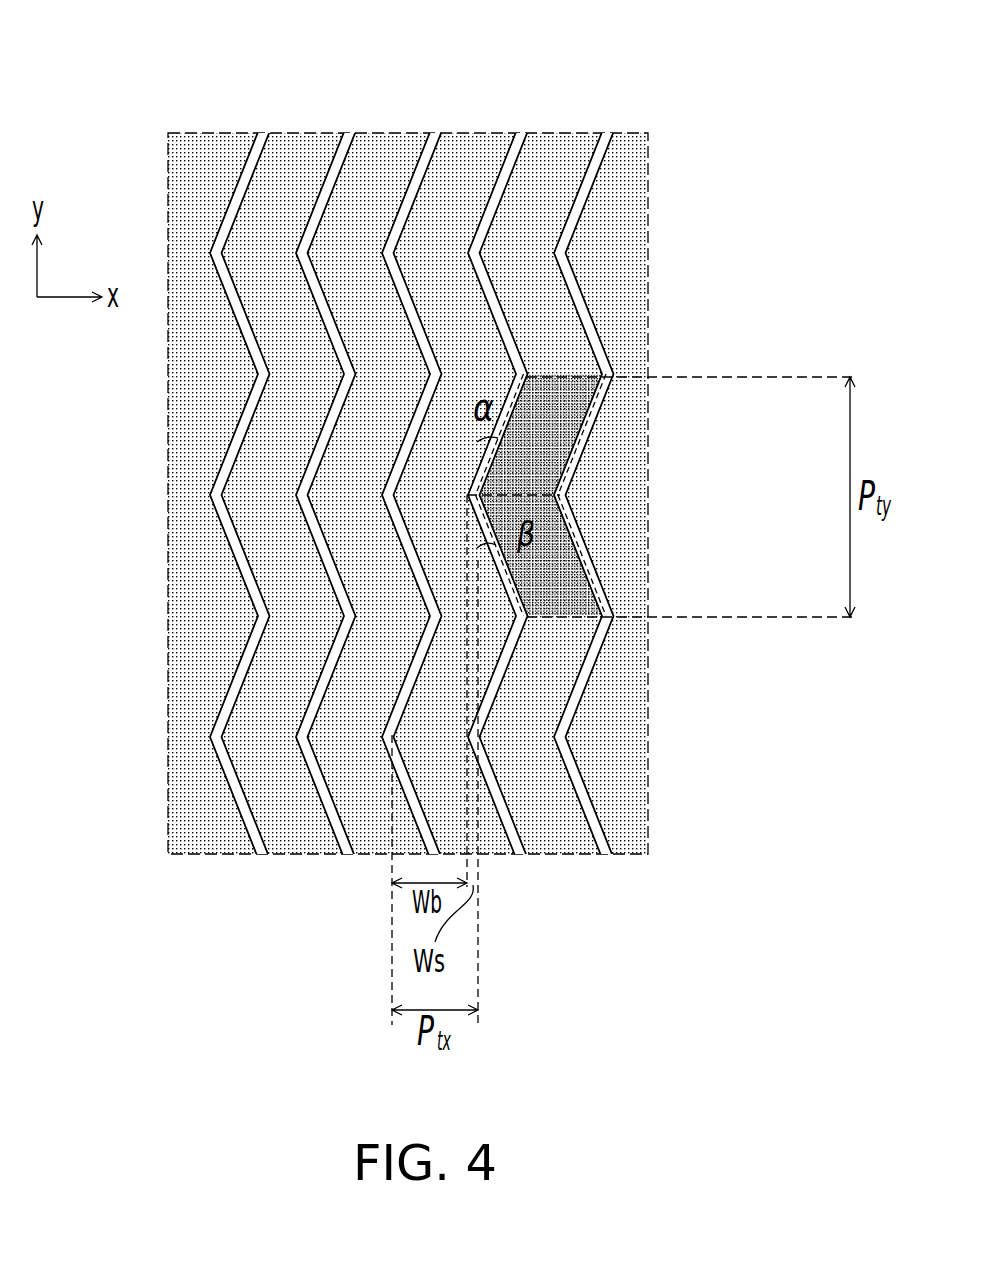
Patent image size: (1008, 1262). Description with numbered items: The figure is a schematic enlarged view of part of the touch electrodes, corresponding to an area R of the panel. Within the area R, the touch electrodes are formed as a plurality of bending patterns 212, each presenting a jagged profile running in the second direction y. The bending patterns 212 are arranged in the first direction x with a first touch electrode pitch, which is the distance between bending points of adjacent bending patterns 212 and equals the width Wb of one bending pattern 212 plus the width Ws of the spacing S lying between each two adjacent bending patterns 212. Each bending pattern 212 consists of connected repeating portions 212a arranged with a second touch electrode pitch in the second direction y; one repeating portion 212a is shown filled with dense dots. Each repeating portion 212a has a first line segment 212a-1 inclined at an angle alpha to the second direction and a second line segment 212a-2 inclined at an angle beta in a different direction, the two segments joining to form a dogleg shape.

The bending pattern 212 is at (480, 152).
The repeating portion 212a is at (773, 442).
The first line segment 212a-1 is at (578, 437).
The second line segment 212a-2 is at (573, 543).
The spacing S is at (530, 123).
The area R is at (648, 177).